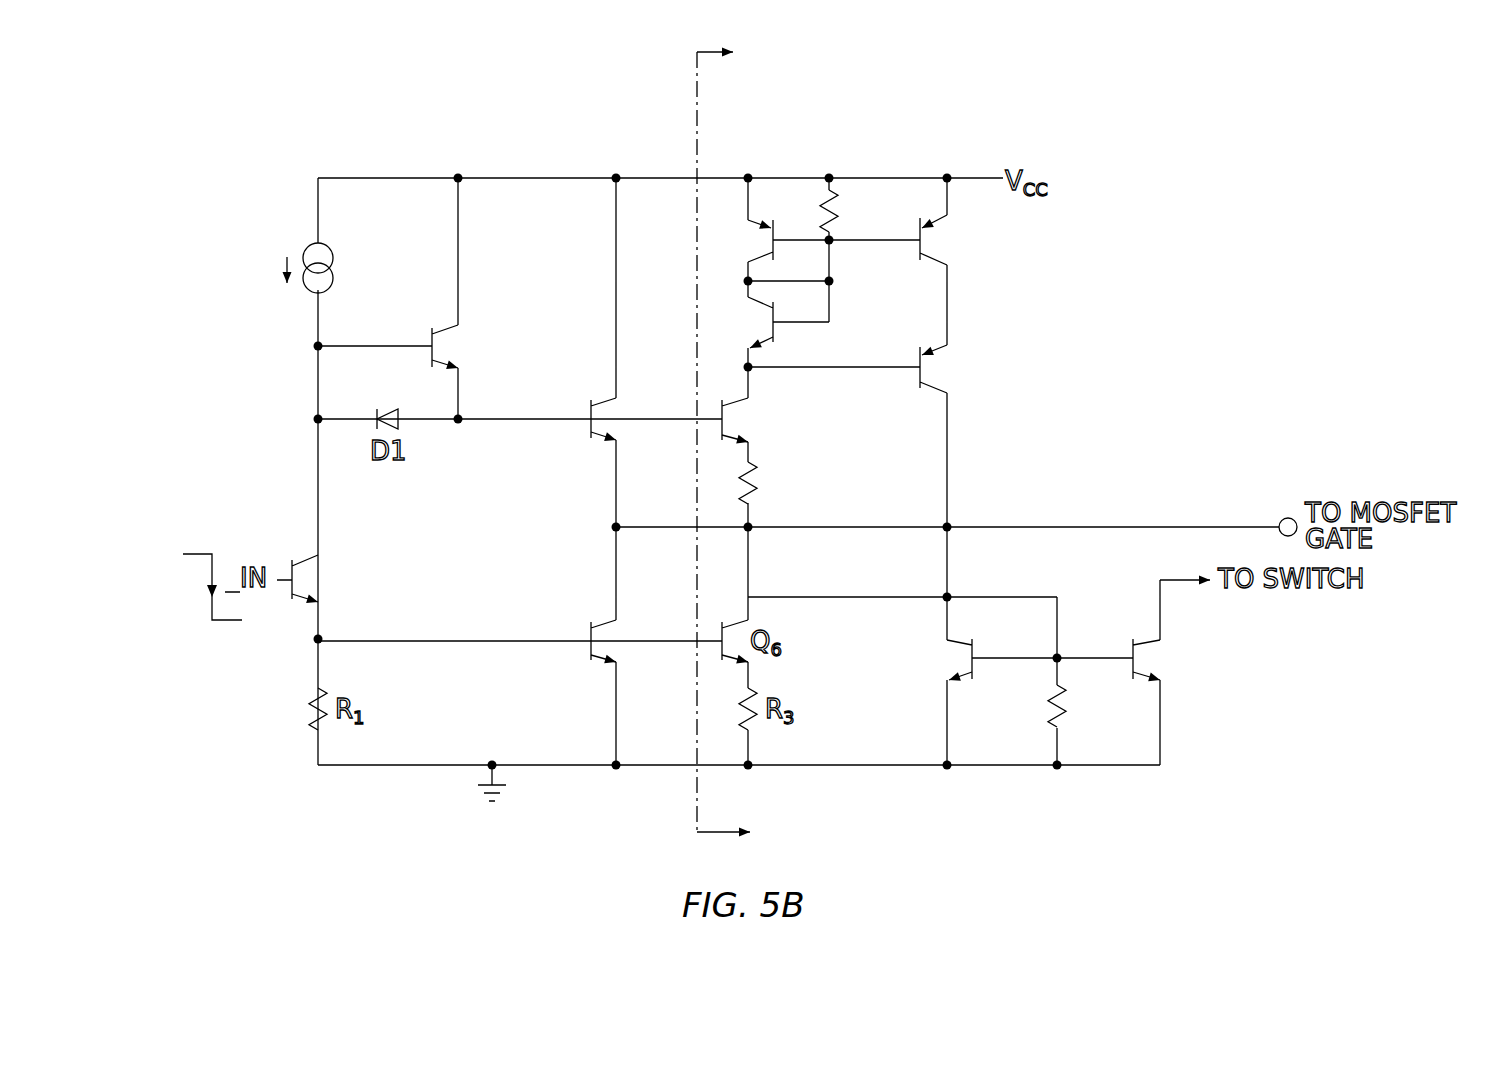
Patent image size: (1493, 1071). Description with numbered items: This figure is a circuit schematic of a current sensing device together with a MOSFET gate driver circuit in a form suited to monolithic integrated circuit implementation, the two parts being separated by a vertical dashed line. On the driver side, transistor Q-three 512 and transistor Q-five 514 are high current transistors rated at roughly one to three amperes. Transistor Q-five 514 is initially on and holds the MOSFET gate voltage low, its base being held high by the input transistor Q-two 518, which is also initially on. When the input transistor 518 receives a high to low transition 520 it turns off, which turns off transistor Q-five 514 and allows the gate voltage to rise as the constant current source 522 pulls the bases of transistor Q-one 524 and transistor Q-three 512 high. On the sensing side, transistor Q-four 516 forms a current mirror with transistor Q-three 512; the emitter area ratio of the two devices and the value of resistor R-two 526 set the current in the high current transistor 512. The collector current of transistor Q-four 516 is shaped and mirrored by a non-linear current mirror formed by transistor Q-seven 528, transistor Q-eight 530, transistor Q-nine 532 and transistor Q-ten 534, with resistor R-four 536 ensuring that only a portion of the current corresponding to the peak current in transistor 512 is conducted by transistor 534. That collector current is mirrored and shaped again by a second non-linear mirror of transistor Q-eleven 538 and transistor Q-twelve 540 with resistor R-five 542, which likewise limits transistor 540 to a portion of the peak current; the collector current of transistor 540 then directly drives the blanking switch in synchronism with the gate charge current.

The transistor Q3 512 is at (617, 398).
The transistor Q5 514 is at (617, 621).
The transistor Q4 516 is at (785, 422).
The input transistor Q2 518 is at (360, 585).
The high to low transition 520 is at (195, 553).
The constant current source I0 522 is at (272, 250).
The transistor Q1 524 is at (498, 347).
The resistor R2 526 is at (800, 490).
The transistor Q7 528 is at (703, 318).
The transistor Q8 530 is at (703, 236).
The transistor Q9 532 is at (985, 242).
The transistor Q10 534 is at (997, 372).
The resistor R4 536 is at (880, 212).
The transistor Q11 538 is at (893, 652).
The transistor Q12 540 is at (1208, 668).
The resistor R5 542 is at (1088, 722).